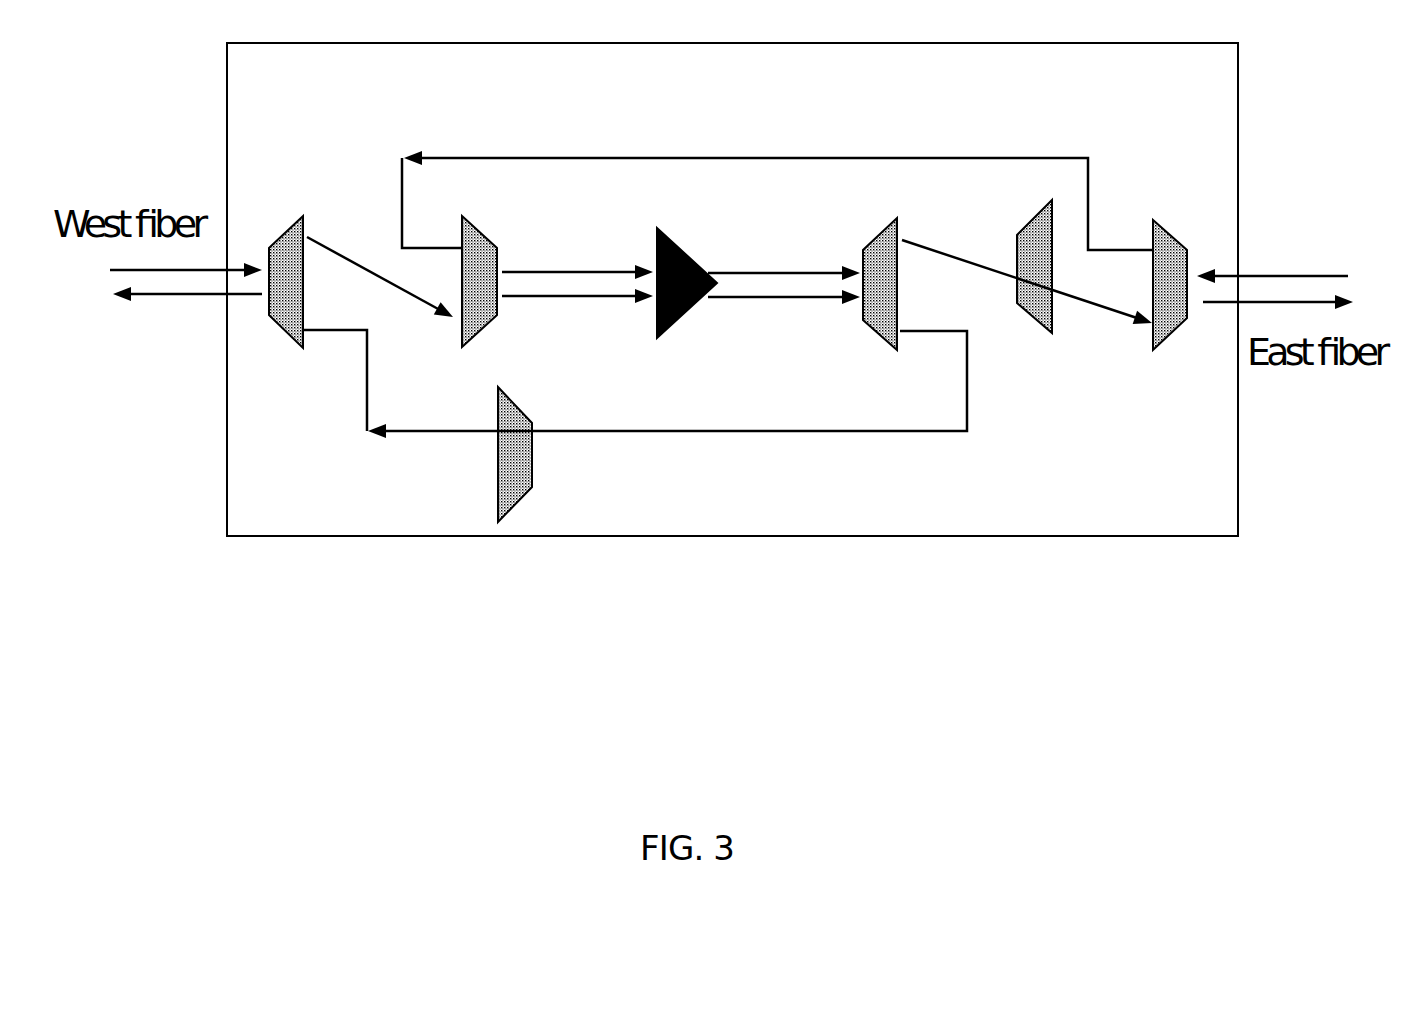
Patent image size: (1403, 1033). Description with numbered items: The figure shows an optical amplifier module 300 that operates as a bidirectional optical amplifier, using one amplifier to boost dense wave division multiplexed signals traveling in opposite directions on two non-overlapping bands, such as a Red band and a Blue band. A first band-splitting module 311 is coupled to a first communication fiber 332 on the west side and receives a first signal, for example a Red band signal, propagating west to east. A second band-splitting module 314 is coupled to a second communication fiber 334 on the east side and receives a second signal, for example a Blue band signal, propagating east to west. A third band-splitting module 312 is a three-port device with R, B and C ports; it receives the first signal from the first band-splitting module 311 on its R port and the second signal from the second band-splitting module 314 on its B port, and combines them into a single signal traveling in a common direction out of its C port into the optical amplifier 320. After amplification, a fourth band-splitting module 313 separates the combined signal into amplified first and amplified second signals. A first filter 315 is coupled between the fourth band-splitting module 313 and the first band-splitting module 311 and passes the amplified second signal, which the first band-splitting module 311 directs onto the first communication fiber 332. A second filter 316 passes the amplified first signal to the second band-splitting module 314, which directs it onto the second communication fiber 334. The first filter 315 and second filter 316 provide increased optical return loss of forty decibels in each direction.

The optical amplifier module 300 is at (260, 537).
The first band-splitting module 311 is at (283, 337).
The third band-splitting module 312 is at (483, 237).
The fourth band-splitting module 313 is at (873, 237).
The second band-splitting module 314 is at (1180, 335).
The first filter 315 is at (497, 465).
The second filter 316 is at (1013, 237).
The optical amplifier 320 is at (692, 250).
The first communication fiber 332 is at (181, 310).
The second communication fiber 334 is at (1284, 260).